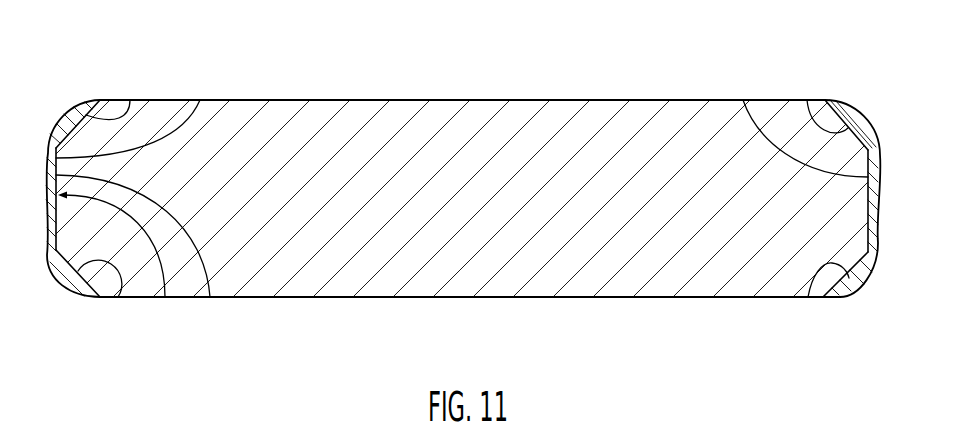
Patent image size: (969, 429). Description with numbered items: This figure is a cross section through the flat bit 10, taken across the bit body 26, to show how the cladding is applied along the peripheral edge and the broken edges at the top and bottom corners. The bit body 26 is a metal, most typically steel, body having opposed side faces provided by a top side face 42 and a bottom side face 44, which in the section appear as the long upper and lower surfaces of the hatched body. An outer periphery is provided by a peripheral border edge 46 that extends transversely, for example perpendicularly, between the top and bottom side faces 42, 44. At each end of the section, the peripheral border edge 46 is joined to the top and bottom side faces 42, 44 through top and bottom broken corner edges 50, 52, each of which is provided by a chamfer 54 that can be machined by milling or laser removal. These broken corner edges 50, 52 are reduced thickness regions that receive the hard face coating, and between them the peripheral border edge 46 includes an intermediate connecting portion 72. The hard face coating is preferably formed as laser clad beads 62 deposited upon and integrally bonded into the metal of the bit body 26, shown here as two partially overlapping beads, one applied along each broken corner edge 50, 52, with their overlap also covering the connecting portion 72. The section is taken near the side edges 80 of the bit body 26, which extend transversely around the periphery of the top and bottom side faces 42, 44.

The flat bit 10 is at (491, 51).
The bit body 26 is at (368, 128).
The top side face 42 is at (290, 100).
The bottom side face 44 is at (323, 297).
The peripheral border edge 46 is at (165, 297).
The top broken corner edge 50 is at (130, 100).
The bottom broken corner edge 52 is at (118, 297).
The chamfer 54 is at (807, 100).
The laser clad beads 62 is at (872, 138).
The intermediate connecting portion 72 is at (210, 297).
The side edges 80 is at (200, 100).